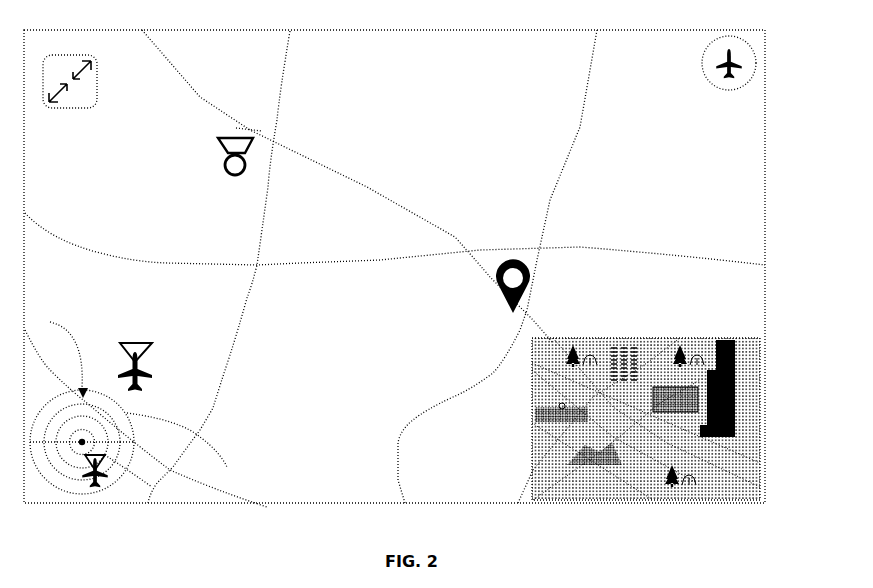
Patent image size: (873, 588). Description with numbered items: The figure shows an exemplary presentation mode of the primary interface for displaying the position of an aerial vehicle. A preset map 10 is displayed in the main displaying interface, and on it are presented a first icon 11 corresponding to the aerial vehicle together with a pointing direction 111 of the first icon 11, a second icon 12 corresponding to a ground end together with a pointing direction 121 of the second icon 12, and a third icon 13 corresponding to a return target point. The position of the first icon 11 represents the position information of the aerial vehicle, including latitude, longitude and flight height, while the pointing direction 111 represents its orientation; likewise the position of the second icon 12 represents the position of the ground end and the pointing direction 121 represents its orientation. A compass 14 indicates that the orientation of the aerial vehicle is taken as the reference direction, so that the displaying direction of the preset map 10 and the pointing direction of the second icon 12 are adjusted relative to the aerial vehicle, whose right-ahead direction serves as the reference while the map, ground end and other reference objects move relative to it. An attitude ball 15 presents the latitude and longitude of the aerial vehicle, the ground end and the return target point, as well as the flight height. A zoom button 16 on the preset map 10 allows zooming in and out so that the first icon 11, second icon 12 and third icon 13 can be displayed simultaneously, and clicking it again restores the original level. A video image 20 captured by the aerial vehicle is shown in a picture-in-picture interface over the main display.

The preset map 10 is at (737, 168).
The first icon 11 is at (148, 370).
The pointing direction of the first icon 111 is at (132, 340).
The second icon 12 is at (217, 147).
The pointing direction of the second icon 121 is at (248, 130).
The third icon 13 is at (495, 270).
The compass 14 is at (756, 63).
The attitude ball 15 is at (179, 446).
The zoom button 16 is at (98, 83).
The video image 20 is at (613, 337).